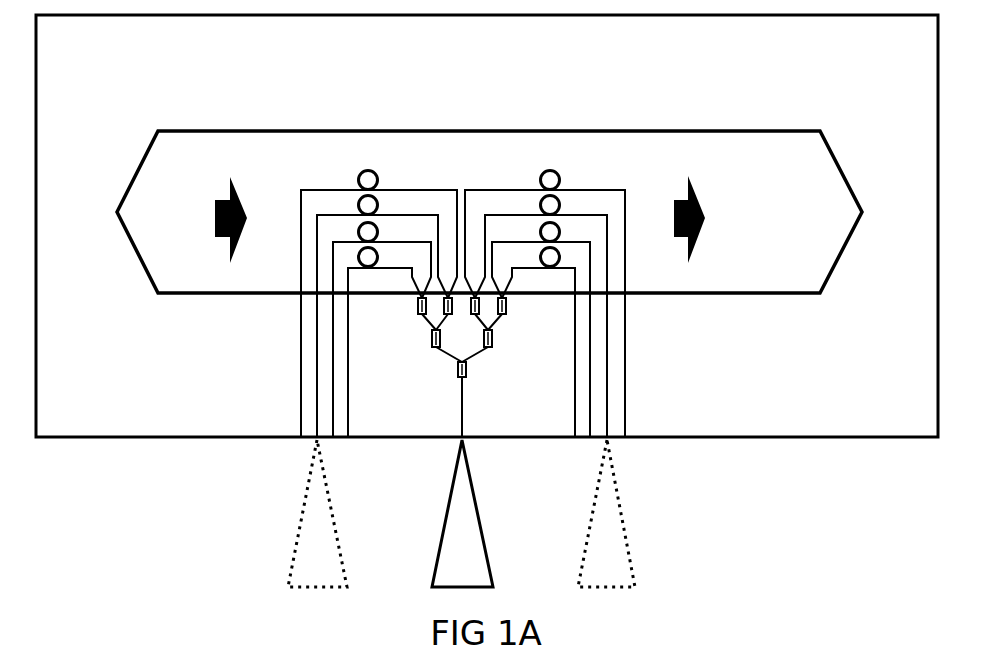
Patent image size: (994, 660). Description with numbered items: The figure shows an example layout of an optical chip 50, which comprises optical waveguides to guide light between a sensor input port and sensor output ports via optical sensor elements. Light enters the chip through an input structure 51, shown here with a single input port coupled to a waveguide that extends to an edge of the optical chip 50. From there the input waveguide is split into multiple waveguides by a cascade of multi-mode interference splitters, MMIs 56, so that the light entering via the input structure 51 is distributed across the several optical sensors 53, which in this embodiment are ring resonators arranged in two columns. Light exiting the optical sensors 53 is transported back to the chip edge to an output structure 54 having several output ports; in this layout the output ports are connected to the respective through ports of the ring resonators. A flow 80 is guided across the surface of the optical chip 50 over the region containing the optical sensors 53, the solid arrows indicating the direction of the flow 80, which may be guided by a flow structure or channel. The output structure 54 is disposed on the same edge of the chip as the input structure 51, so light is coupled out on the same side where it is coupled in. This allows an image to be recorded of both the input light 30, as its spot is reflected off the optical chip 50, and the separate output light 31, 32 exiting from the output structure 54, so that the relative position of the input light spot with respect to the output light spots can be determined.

The optical chip 50 is at (895, 50).
The flow 80 is at (158, 226).
The optical sensors 53 is at (459, 204).
The output structure 54 is at (251, 433).
The multi-mode interference 56 is at (471, 390).
The input structure 51 is at (430, 431).
The input light 30 is at (450, 574).
The output light 31 is at (595, 574).
The output light 32 is at (305, 574).